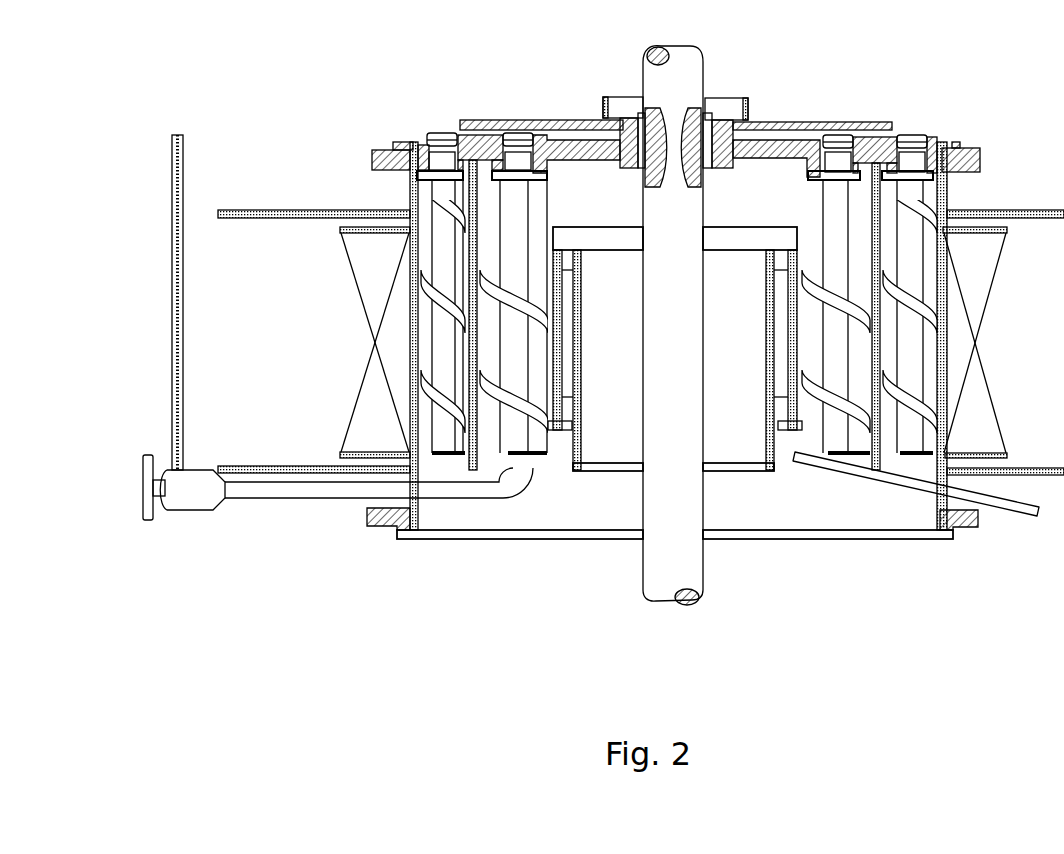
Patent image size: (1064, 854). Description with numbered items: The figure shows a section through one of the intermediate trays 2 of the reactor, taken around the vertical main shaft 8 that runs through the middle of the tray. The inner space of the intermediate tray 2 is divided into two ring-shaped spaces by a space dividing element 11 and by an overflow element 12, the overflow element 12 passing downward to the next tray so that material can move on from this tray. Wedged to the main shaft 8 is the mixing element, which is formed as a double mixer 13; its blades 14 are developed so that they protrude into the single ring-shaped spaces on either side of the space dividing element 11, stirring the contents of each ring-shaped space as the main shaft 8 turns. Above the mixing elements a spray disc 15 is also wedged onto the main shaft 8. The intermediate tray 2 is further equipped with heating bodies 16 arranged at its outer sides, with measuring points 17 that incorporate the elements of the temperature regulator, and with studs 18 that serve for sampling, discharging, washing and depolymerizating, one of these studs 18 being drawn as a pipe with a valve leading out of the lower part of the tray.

The intermediate tray 2 is at (948, 193).
The main shaft 8 is at (662, 83).
The space dividing element 11 is at (885, 265).
The overflow element 12 is at (768, 430).
The double mixer 13 is at (778, 150).
The blades 14 is at (837, 290).
The spray disc 15 is at (854, 122).
The heating bodies 16 is at (350, 282).
The measuring points 17 is at (1005, 507).
The sampling, discharging, washing and depolymerizating studs 18 is at (283, 488).